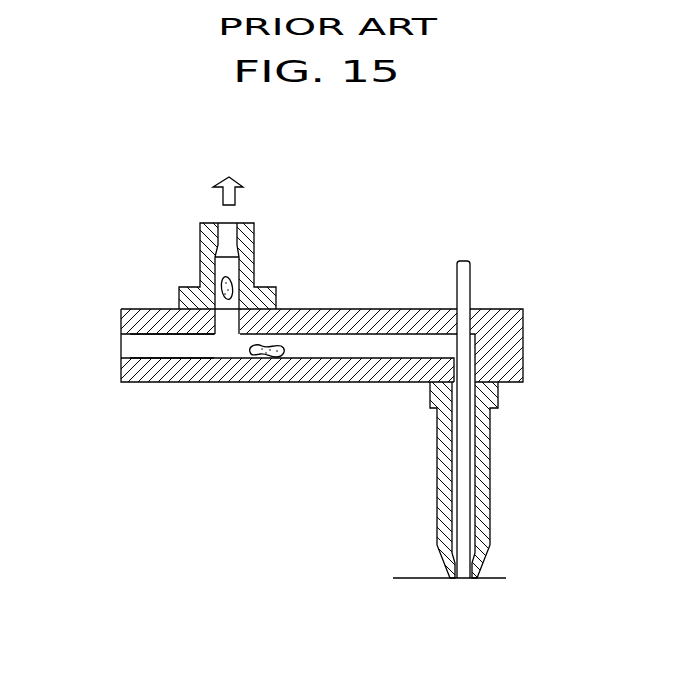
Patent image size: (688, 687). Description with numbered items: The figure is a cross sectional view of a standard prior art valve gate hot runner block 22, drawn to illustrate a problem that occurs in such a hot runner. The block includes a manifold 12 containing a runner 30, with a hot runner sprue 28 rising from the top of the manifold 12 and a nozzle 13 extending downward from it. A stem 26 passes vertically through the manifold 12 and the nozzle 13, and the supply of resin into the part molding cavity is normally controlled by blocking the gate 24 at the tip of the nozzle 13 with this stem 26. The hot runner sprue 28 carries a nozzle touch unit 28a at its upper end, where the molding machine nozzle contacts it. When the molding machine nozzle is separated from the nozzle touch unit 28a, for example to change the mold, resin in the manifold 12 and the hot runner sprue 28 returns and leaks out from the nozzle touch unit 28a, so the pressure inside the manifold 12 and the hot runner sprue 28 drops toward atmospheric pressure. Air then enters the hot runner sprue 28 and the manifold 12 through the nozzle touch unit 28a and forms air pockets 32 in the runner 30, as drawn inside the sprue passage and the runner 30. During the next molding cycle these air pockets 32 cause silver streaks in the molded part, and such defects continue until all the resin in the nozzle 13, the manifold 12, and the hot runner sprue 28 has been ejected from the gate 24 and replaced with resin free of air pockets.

The manifold 12 is at (378, 309).
The nozzle 13 is at (492, 480).
The valve gate hot runner block 22 is at (561, 271).
The gate 24 is at (480, 598).
The stem 26 is at (473, 269).
The hot runner sprue 28 is at (256, 247).
The nozzle touch unit 28a is at (229, 223).
The runner 30 is at (132, 347).
The air pockets 32 is at (226, 301).